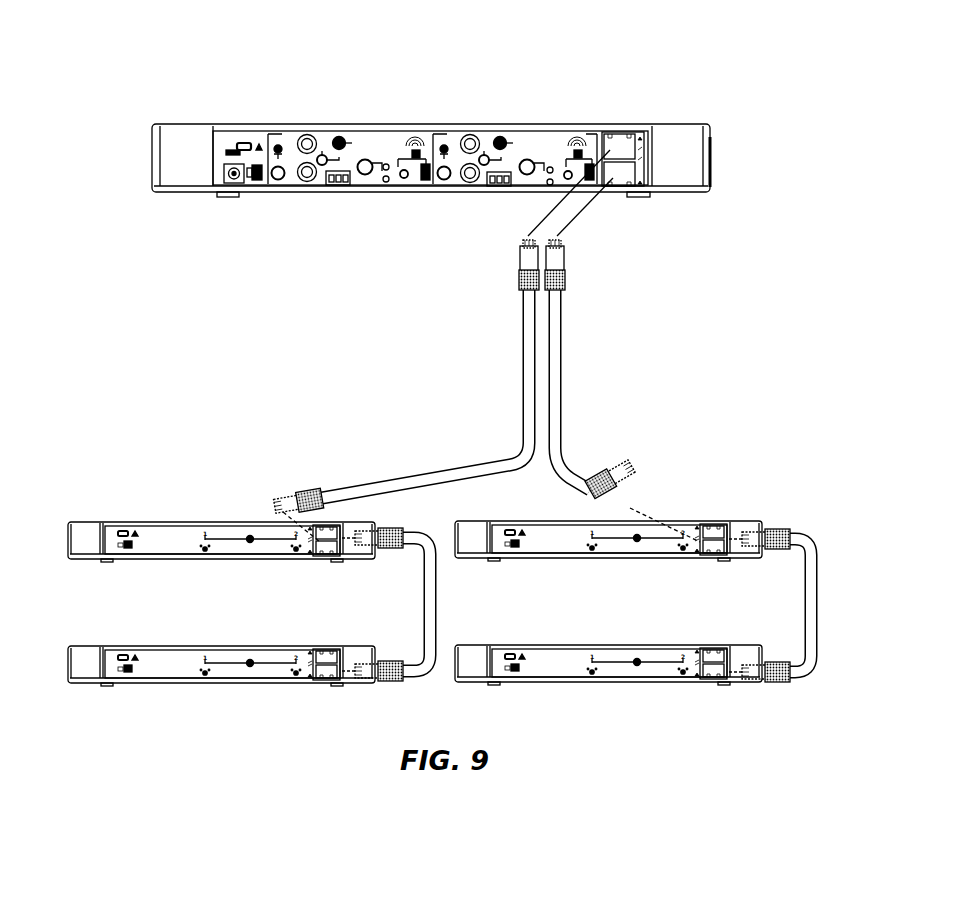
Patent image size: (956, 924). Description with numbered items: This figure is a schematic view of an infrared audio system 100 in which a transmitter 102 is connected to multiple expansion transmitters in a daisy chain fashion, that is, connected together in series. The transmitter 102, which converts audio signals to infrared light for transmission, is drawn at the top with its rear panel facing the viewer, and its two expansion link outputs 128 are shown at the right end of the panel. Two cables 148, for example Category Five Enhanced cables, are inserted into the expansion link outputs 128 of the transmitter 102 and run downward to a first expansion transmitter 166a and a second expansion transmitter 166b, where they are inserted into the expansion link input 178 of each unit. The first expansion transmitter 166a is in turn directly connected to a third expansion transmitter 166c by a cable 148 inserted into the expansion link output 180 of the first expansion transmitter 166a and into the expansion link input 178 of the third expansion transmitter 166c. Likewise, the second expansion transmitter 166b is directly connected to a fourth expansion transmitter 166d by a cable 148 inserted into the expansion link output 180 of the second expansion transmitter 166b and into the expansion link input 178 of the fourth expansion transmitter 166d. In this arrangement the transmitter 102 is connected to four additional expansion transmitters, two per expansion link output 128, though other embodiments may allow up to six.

The infrared audio system 100 is at (466, 133).
The transmitter 102 is at (191, 146).
The expansion link output 128 is at (609, 173).
The cable 148 is at (524, 345).
The first expansion transmitter 166a is at (85, 533).
The second expansion transmitter 166b is at (688, 528).
The third expansion transmitter 166c is at (88, 658).
The fourth expansion transmitter 166d is at (470, 656).
The expansion link input 178 is at (713, 557).
The expansion link output 180 is at (325, 533).